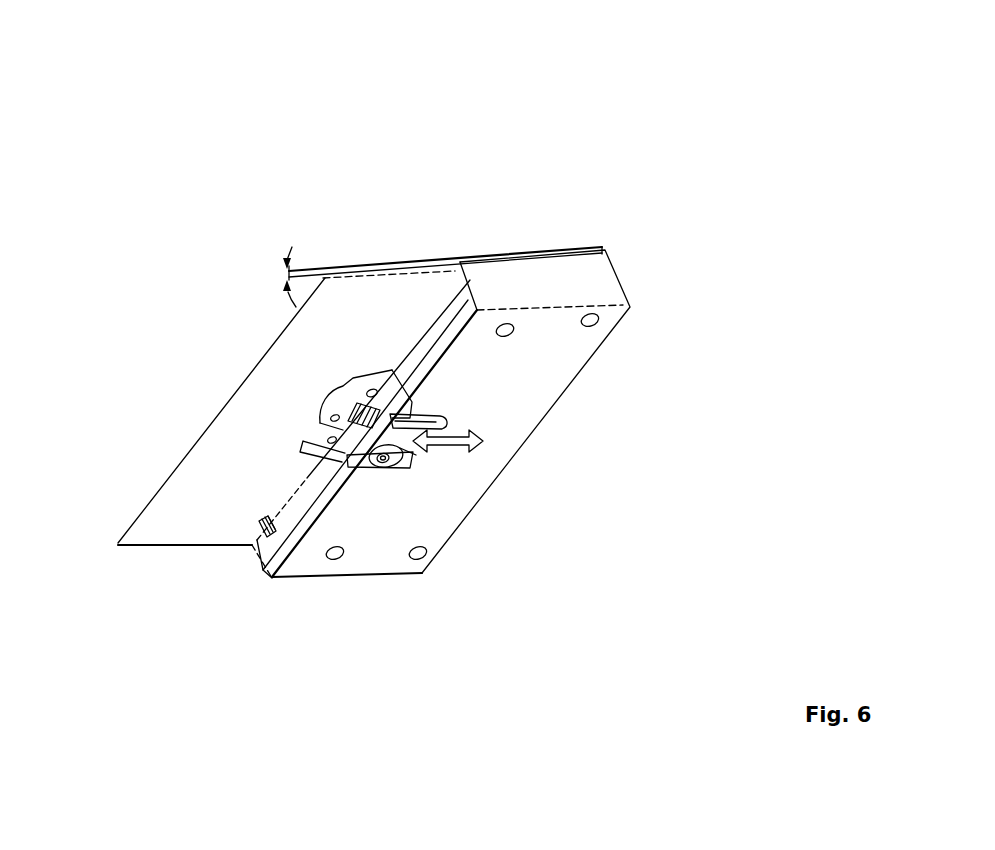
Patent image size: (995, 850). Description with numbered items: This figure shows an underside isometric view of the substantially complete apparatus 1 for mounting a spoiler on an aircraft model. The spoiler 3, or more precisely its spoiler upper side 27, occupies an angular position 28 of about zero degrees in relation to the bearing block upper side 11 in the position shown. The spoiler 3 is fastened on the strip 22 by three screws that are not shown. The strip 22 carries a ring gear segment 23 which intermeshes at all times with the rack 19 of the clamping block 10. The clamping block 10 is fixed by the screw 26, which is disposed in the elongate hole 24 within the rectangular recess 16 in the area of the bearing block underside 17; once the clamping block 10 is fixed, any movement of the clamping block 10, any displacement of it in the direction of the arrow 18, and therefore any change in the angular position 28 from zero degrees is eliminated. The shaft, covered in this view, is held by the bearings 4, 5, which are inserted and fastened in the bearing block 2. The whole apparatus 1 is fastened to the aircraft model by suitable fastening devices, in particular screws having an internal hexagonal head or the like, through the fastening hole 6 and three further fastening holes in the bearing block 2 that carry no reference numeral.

The apparatus 1 is at (461, 94).
The bearing block 2 is at (602, 293).
The spoiler 3 is at (422, 275).
The bearing 4 is at (306, 472).
The bearing 5 is at (400, 363).
The fastening hole 6 is at (427, 553).
The clamping block 10 is at (308, 472).
The bearing block upper side 11 is at (546, 246).
The rectangular recess 16 is at (363, 470).
The bearing block underside 17 is at (541, 358).
The arrow 18 is at (483, 441).
The rack 19 is at (318, 442).
The strip 22 is at (347, 402).
The ring gear segment 23 is at (350, 418).
The elongate hole 24 is at (405, 452).
The screw 26 is at (385, 460).
The spoiler upper side 27 is at (228, 379).
The angular position 28 is at (285, 253).